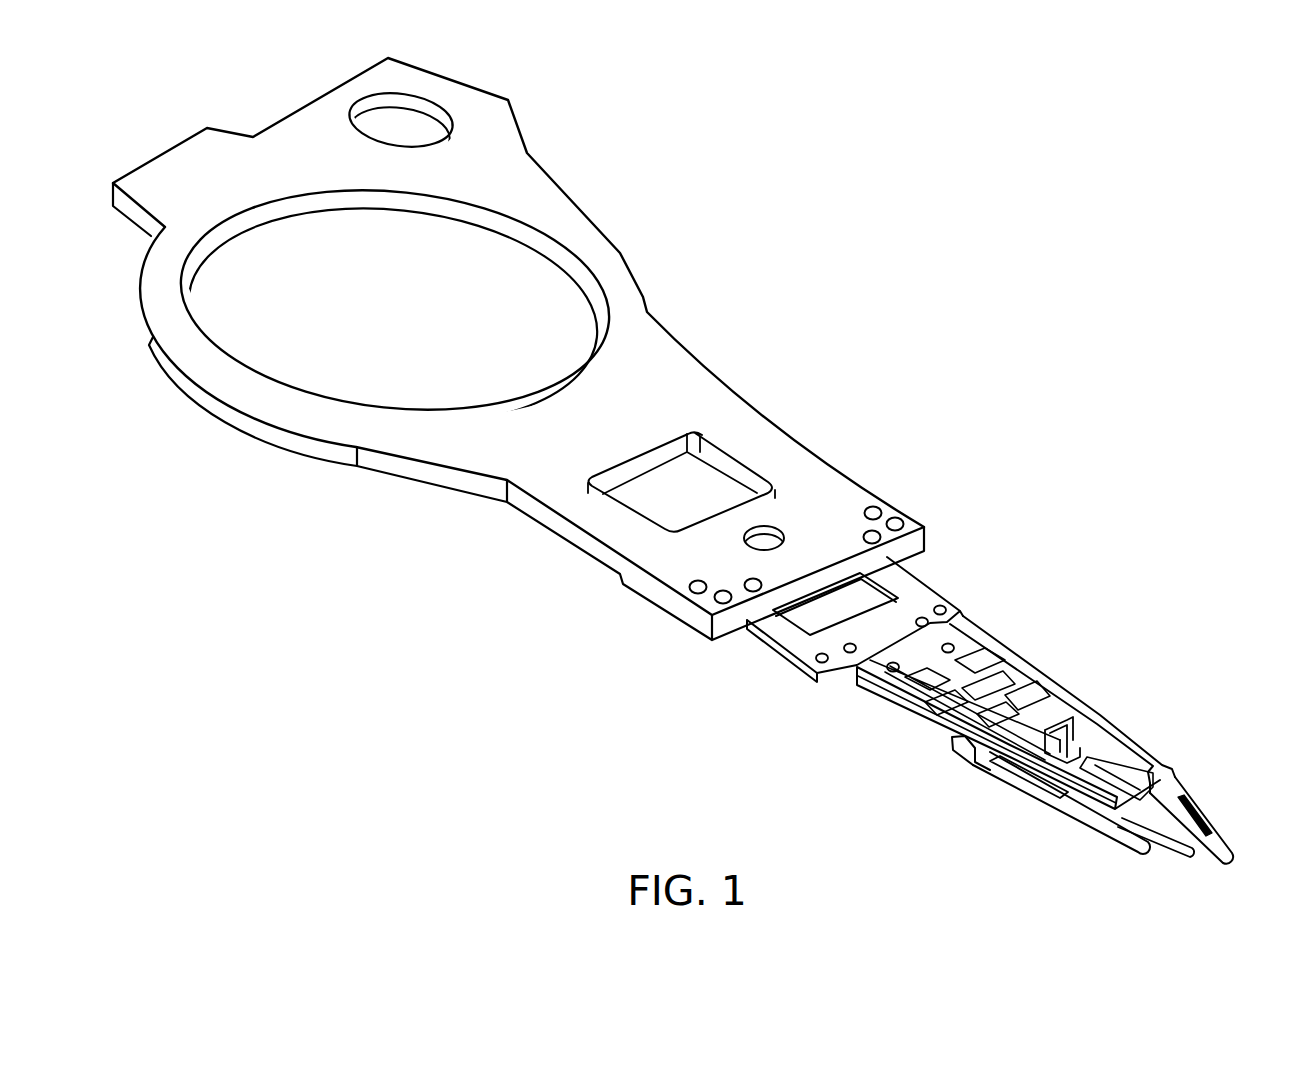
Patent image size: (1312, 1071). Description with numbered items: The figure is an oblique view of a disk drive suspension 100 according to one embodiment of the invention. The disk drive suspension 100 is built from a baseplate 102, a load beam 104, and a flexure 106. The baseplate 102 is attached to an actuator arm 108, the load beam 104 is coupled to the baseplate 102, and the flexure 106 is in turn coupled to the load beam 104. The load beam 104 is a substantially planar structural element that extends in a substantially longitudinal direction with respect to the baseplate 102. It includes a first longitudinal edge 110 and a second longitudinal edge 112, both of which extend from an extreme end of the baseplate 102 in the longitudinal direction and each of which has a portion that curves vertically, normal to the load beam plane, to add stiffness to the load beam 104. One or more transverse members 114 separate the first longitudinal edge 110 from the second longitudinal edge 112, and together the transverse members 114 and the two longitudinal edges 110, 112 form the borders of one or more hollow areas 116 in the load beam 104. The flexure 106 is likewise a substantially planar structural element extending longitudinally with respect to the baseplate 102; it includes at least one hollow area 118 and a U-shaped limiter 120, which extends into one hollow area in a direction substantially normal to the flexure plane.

The disk drive suspension 100 is at (345, 621).
The baseplate 102 is at (920, 595).
The load beam 104 is at (1180, 822).
The flexure 106 is at (1090, 802).
The actuator arm 108 is at (695, 398).
The first longitudinal edge 110 is at (1100, 732).
The second longitudinal edge 112 is at (887, 688).
The transverse members 114 is at (1008, 682).
The hollow areas 116 is at (960, 739).
The hollow area 118 is at (1025, 767).
The U-shaped limiter 120 is at (1060, 718).